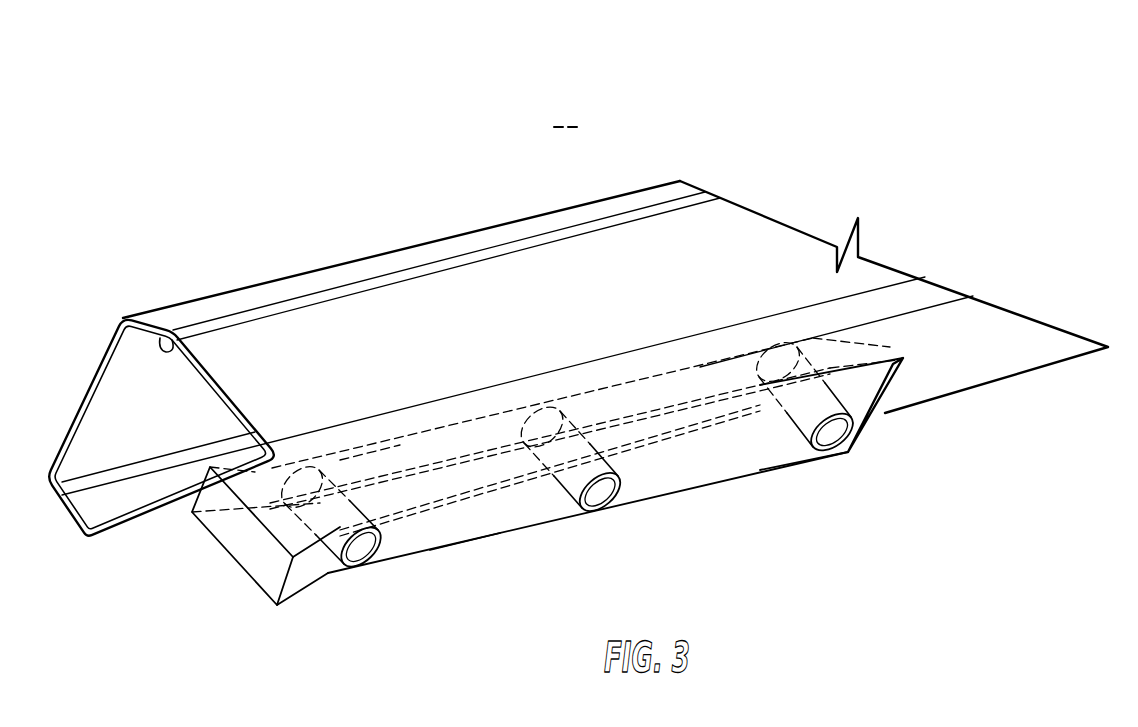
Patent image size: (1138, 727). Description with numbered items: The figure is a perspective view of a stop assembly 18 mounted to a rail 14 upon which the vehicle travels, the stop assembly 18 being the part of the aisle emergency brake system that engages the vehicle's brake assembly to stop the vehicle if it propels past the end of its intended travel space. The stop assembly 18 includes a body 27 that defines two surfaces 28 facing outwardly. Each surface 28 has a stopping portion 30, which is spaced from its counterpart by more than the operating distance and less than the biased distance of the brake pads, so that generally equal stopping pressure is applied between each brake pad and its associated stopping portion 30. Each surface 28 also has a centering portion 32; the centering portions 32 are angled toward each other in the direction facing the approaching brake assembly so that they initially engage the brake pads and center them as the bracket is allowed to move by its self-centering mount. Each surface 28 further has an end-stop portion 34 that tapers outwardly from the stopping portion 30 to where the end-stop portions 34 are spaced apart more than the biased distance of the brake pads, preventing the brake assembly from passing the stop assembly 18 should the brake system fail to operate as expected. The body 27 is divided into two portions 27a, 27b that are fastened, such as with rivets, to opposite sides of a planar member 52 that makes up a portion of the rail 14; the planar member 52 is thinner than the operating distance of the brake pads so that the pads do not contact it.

The rail 14 is at (245, 295).
The stop assembly 18 is at (569, 120).
The body 27 is at (413, 562).
The first portion of body 27a is at (368, 452).
The second portion of body 27b is at (440, 553).
The surface 28 is at (565, 400).
The stopping portion 30 is at (643, 377).
The centering portion 32 is at (853, 347).
The end-stop portion 34 is at (202, 492).
The planar member 52 is at (990, 385).